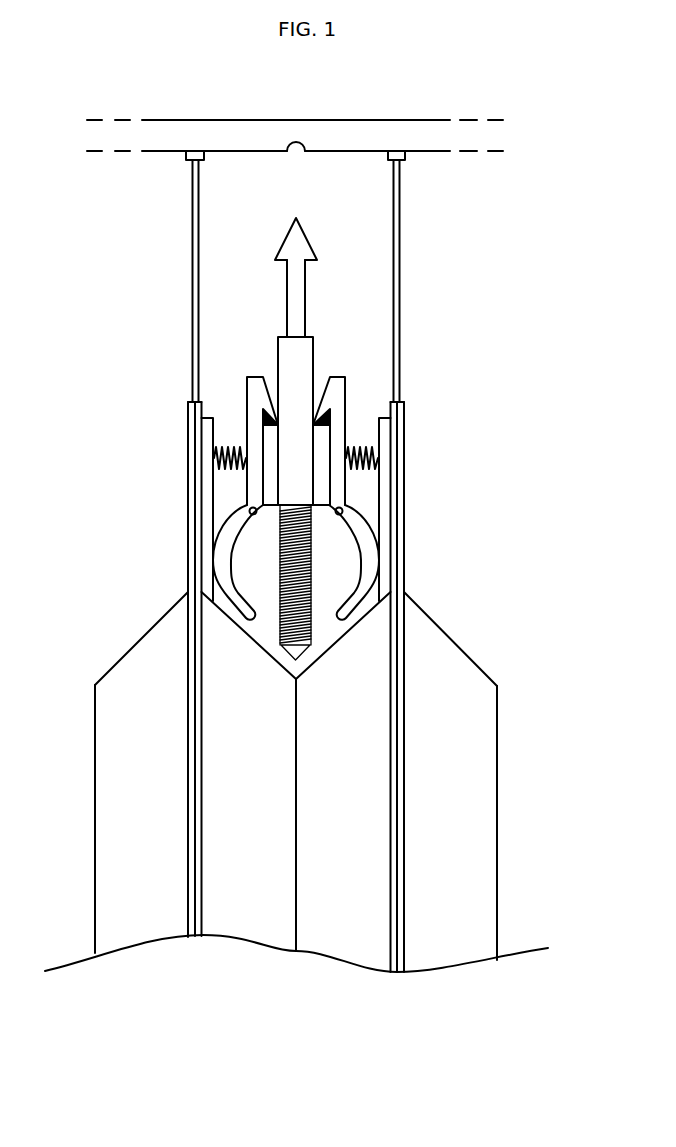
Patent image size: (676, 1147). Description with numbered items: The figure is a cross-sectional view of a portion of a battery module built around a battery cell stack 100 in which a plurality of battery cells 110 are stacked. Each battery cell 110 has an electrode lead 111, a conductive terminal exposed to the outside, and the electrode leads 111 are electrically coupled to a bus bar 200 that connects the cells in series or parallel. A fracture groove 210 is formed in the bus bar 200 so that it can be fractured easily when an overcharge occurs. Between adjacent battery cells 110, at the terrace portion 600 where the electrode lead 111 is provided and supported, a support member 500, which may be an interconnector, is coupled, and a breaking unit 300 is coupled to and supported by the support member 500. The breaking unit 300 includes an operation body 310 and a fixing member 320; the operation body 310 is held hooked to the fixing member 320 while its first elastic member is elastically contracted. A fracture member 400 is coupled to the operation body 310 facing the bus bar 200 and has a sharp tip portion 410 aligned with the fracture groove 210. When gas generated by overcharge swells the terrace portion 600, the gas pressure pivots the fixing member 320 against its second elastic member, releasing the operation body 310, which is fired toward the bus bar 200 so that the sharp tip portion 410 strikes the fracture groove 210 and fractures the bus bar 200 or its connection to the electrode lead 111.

The battery cell stack 100 is at (525, 646).
The battery cell 110 is at (95, 762).
The electrode lead 111 is at (404, 258).
The bus bar 200 is at (372, 120).
The fracture groove 210 is at (293, 150).
The breaking unit 300 is at (339, 476).
The operation body 310 is at (313, 343).
The fixing member 320 is at (345, 410).
The fracture member 400 is at (320, 256).
The sharp tip portion 410 is at (297, 216).
The support member 500 is at (385, 482).
The terrace portion 600 is at (456, 586).